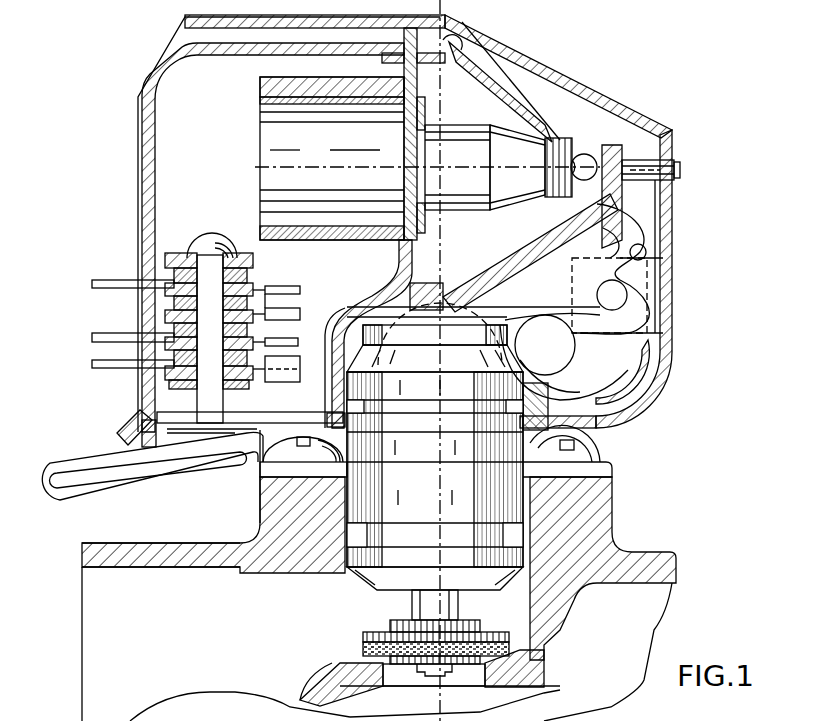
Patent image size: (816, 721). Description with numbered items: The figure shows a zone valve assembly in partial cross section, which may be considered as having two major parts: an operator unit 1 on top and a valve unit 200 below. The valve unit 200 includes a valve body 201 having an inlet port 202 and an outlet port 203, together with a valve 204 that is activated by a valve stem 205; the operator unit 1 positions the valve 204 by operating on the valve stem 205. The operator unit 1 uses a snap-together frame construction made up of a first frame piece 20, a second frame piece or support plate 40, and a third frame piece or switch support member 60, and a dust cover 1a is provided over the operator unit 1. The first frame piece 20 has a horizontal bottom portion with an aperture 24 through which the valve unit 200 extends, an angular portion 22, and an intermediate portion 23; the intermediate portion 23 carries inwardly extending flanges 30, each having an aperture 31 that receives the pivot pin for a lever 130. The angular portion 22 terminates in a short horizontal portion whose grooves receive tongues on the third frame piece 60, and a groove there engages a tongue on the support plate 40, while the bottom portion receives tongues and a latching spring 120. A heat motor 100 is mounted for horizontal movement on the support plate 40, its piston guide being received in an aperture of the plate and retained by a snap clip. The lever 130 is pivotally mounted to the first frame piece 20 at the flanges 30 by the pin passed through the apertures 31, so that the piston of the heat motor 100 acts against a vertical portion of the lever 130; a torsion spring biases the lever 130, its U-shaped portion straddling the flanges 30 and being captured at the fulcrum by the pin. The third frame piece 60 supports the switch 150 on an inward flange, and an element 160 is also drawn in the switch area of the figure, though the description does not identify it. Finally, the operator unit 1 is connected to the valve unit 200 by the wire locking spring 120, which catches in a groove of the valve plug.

The operator unit 1 is at (98, 105).
The dust cover 1a is at (300, 17).
The first frame piece 20 is at (627, 403).
The angular portion 22 is at (538, 118).
The intermediate portion 23 is at (655, 270).
The aperture 24 is at (577, 398).
The flanges 30 is at (657, 368).
The aperture 31 is at (650, 308).
The support plate 40 is at (418, 45).
The third frame piece 60 is at (156, 72).
The heat motor 100 is at (248, 124).
The latching spring 120 is at (50, 463).
The lever 130 is at (470, 263).
The switch 150 is at (268, 277).
The brush holder 160 is at (205, 232).
The valve unit 200 is at (634, 529).
The valve body 201 is at (117, 543).
The inlet port 202 is at (636, 613).
The outlet port 203 is at (102, 612).
The valve 204 is at (366, 648).
The valve stem 205 is at (460, 606).